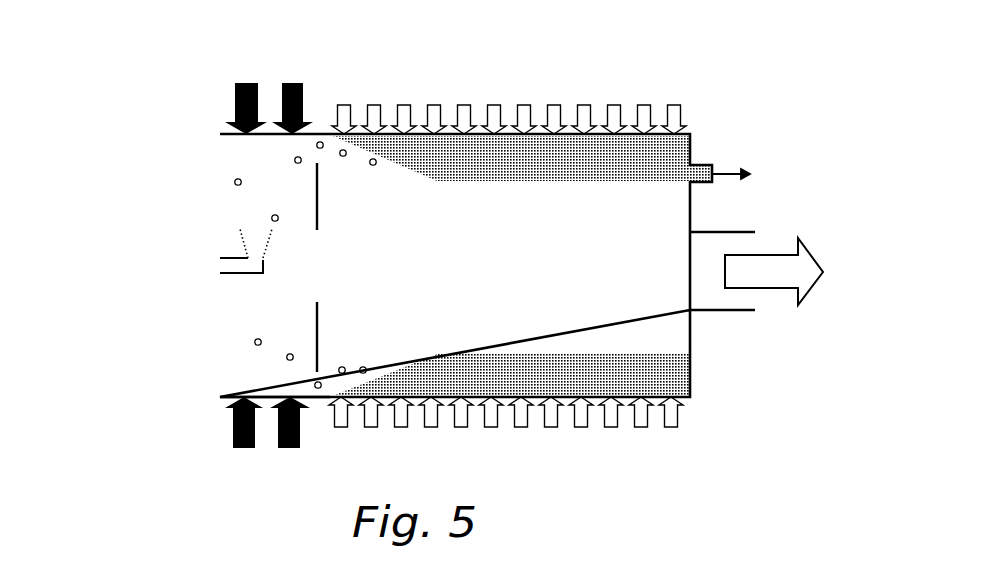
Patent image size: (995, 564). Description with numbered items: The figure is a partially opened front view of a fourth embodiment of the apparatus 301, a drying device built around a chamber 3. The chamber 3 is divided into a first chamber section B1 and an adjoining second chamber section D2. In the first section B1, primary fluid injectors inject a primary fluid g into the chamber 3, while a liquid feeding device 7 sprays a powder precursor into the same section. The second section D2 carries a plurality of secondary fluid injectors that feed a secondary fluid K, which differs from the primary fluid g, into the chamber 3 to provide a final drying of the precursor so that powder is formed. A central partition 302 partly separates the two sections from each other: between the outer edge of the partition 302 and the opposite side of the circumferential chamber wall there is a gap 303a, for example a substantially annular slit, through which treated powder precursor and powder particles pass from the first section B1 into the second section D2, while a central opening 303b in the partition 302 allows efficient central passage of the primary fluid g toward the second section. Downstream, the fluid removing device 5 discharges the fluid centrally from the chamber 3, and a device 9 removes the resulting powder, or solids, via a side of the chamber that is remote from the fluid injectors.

The apparatus 301 is at (205, 116).
The chamber 3 is at (216, 417).
The liquid feeding device 7 is at (220, 258).
The partition 302 is at (317, 330).
The gap 303a is at (319, 378).
The central opening 303b is at (335, 279).
The fluid removing device 5 is at (737, 308).
The device for removing powder particles 9 is at (713, 144).
The primary fluid g is at (269, 276).
The secondary fluid K is at (556, 95).
The first chamber section B1 is at (320, 88).
The second chamber section D2 is at (640, 94).